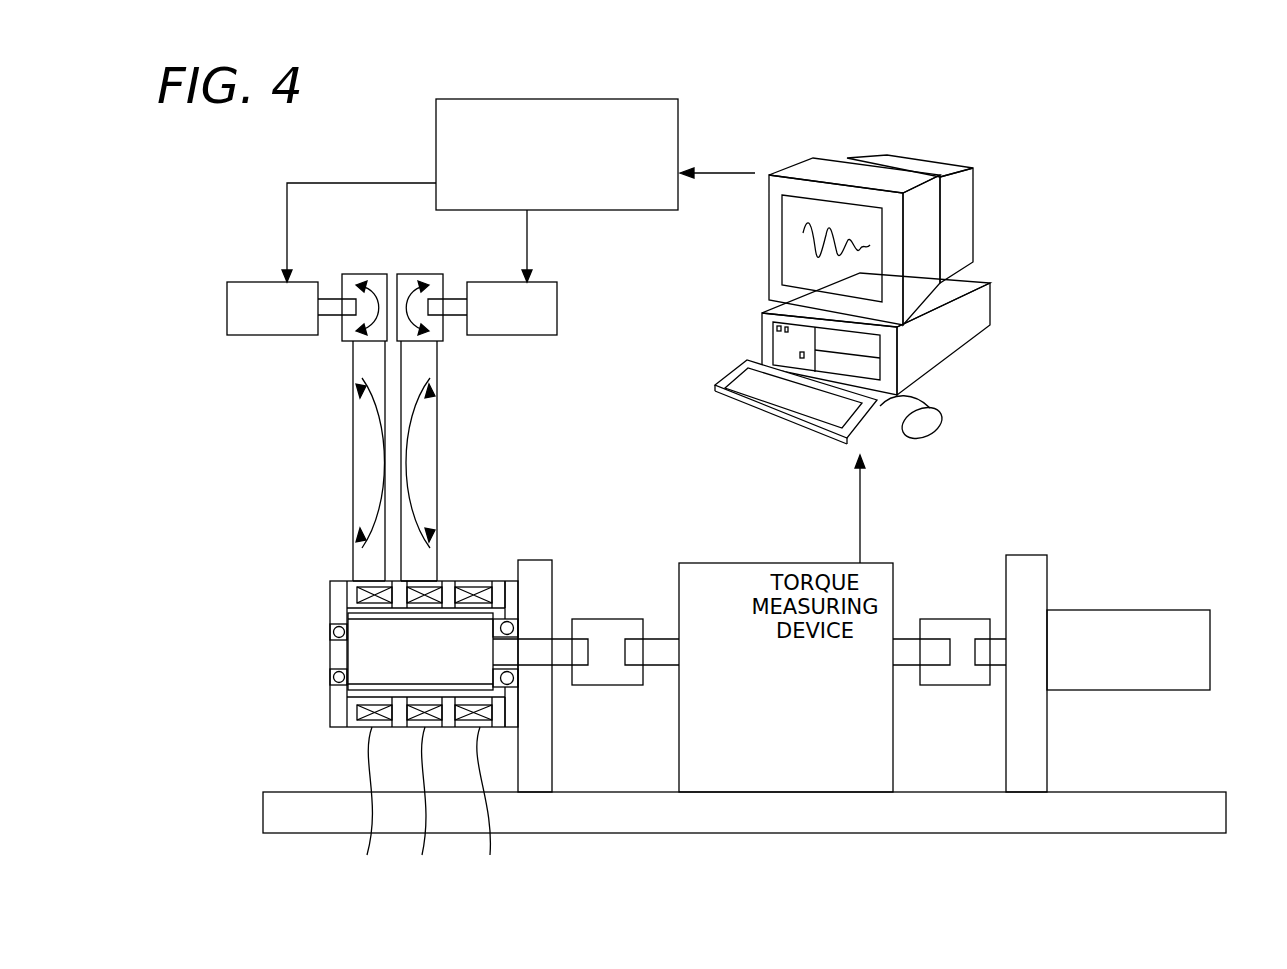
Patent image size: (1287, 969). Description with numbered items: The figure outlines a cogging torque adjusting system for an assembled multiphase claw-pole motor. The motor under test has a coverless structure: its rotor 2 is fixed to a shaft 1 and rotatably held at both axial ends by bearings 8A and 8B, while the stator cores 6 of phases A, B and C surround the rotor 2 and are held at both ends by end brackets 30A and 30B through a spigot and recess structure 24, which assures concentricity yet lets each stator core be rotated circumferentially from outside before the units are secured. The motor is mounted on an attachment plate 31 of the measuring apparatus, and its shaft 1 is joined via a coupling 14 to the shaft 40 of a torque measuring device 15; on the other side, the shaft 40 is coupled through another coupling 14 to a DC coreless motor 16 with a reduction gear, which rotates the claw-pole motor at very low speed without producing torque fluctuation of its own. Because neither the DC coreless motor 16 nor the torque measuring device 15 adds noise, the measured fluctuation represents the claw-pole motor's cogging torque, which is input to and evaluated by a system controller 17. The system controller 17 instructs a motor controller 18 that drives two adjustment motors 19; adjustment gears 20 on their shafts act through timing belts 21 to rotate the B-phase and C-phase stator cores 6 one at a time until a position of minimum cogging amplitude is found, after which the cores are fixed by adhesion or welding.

The shaft 1 is at (337, 650).
The rotor 2 is at (373, 653).
The claw pole core blocks 6 is at (328, 921).
The bearing 8A is at (514, 626).
The bearing 8B is at (333, 632).
The coupling 14 is at (610, 627).
The torque measuring device 15 is at (842, 765).
The DC coreless motor 16 is at (1107, 677).
The system controller 17 is at (933, 340).
The motor controller 18 is at (645, 212).
The adjustment motors 19 is at (250, 333).
The adjustment gears 20 is at (420, 274).
The timing belts 21 is at (367, 503).
The spigot and recess 24 is at (390, 582).
The end bracket 30A is at (505, 595).
The end bracket 30B is at (333, 708).
The attachment plate 31 is at (538, 752).
The shaft 40 is at (658, 647).